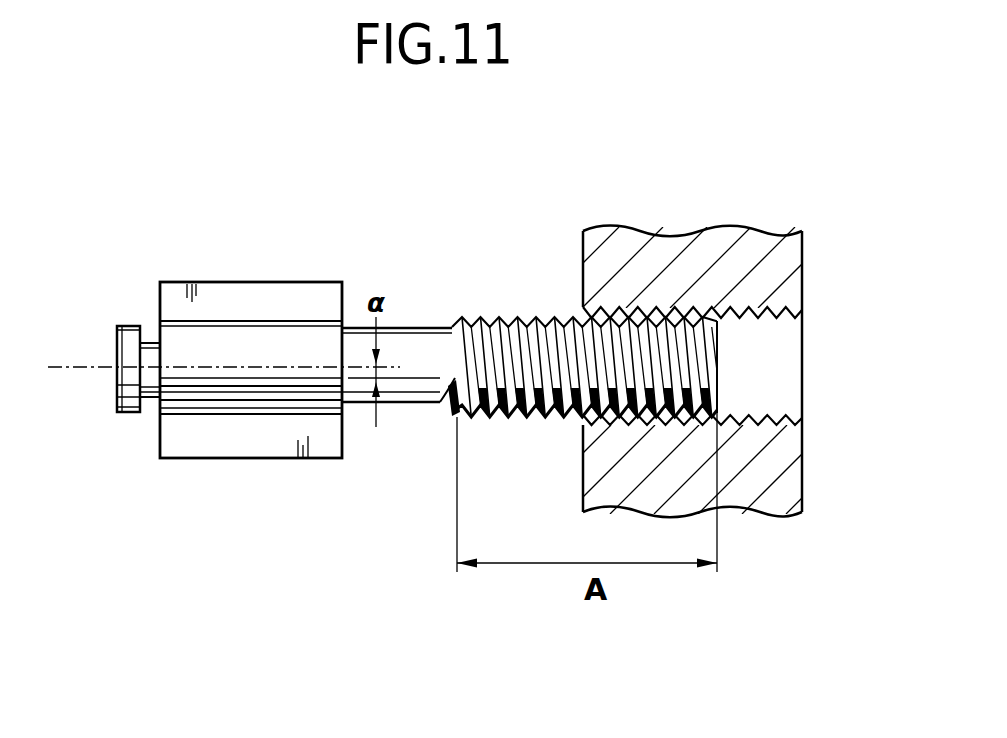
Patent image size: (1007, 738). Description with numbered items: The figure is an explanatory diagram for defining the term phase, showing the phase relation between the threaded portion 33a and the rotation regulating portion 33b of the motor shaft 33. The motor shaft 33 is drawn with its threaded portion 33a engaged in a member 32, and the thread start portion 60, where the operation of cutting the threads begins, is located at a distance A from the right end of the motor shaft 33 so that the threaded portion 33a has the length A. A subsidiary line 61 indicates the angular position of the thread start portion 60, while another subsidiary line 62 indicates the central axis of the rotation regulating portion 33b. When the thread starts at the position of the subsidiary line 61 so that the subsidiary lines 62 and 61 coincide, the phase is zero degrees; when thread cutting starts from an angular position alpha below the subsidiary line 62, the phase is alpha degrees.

The threaded member / bracket 32 is at (676, 244).
The motor shaft 33 is at (364, 220).
The threaded portion 33a is at (510, 316).
The rotation regulating portion 33b is at (217, 418).
The thread start portion 60 is at (447, 382).
The subsidiary line 61 is at (405, 380).
The subsidiary line 62 is at (62, 365).